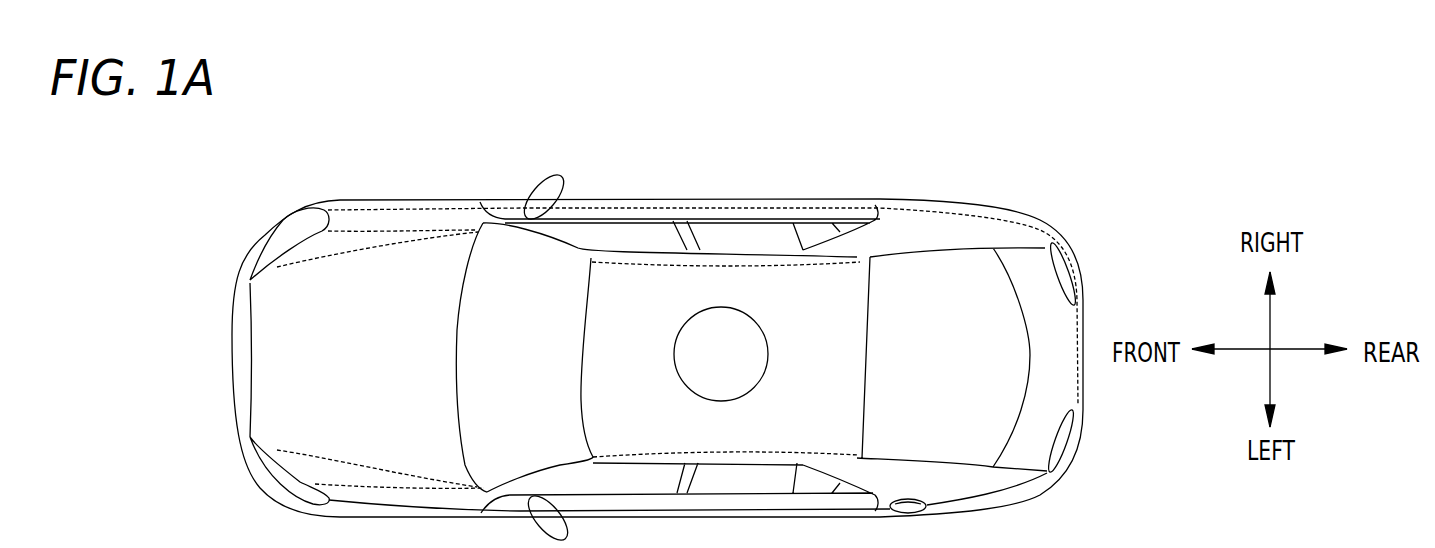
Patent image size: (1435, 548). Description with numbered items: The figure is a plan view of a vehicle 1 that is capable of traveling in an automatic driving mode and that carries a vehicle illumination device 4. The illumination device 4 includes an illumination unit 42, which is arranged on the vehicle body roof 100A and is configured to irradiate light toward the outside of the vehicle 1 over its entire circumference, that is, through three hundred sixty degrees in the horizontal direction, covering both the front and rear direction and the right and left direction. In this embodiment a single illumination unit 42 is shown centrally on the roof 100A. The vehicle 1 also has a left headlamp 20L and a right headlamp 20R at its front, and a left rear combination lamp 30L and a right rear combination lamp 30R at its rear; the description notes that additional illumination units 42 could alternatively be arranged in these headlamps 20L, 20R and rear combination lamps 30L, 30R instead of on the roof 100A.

The vehicle 1 is at (670, 337).
The right headlamp 20R is at (288, 227).
The left headlamp 20L is at (277, 478).
The right rear combination lamp 30R is at (1057, 253).
The left rear combination lamp 30L is at (1063, 467).
The vehicle body roof 100A is at (818, 277).
The vehicle illumination device 4 is at (734, 355).
The illumination unit 42 is at (747, 391).